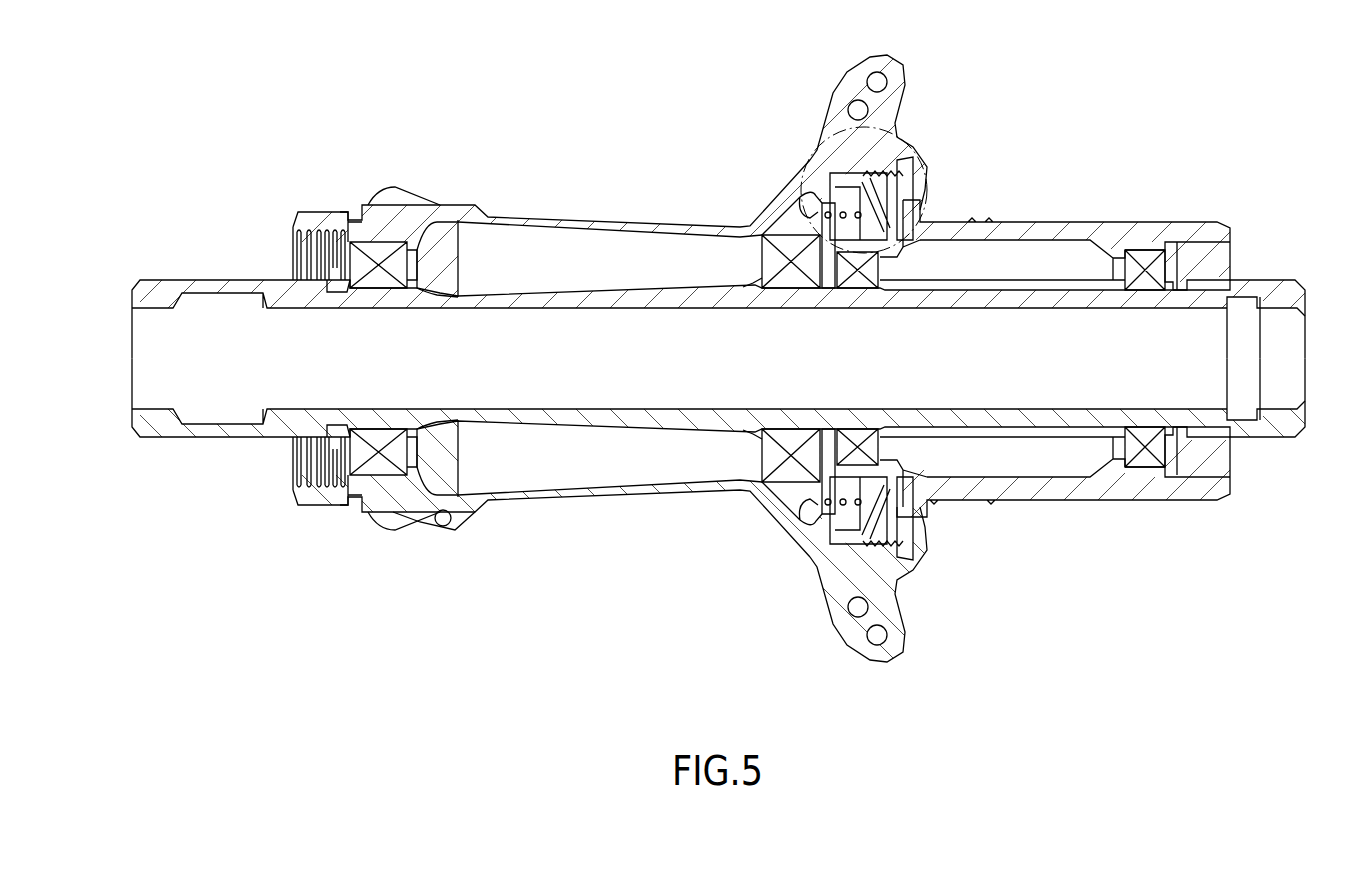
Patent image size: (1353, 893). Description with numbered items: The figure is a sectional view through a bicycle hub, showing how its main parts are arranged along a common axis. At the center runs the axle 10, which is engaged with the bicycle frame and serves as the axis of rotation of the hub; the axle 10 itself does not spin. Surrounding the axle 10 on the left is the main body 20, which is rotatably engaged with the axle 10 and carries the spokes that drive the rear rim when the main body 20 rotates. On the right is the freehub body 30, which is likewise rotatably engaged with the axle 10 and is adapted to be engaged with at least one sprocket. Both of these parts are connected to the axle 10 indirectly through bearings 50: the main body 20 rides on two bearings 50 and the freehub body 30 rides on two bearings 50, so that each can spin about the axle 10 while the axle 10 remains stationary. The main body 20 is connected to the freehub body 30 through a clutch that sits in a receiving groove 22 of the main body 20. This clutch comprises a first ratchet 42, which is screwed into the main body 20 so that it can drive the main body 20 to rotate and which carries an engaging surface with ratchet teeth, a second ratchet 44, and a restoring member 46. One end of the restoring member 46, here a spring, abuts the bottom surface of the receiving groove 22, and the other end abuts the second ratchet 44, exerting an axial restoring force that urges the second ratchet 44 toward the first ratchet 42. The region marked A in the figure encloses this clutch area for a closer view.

The axle 10 is at (637, 427).
The main body 20 is at (598, 218).
The receiving groove 22 is at (826, 517).
The freehub body 30 is at (1068, 216).
The first ratchet 42 is at (887, 523).
The second ratchet 44 is at (880, 225).
The restoring member 46 is at (825, 198).
The bearings 50 is at (372, 468).
The detail region A is at (820, 137).